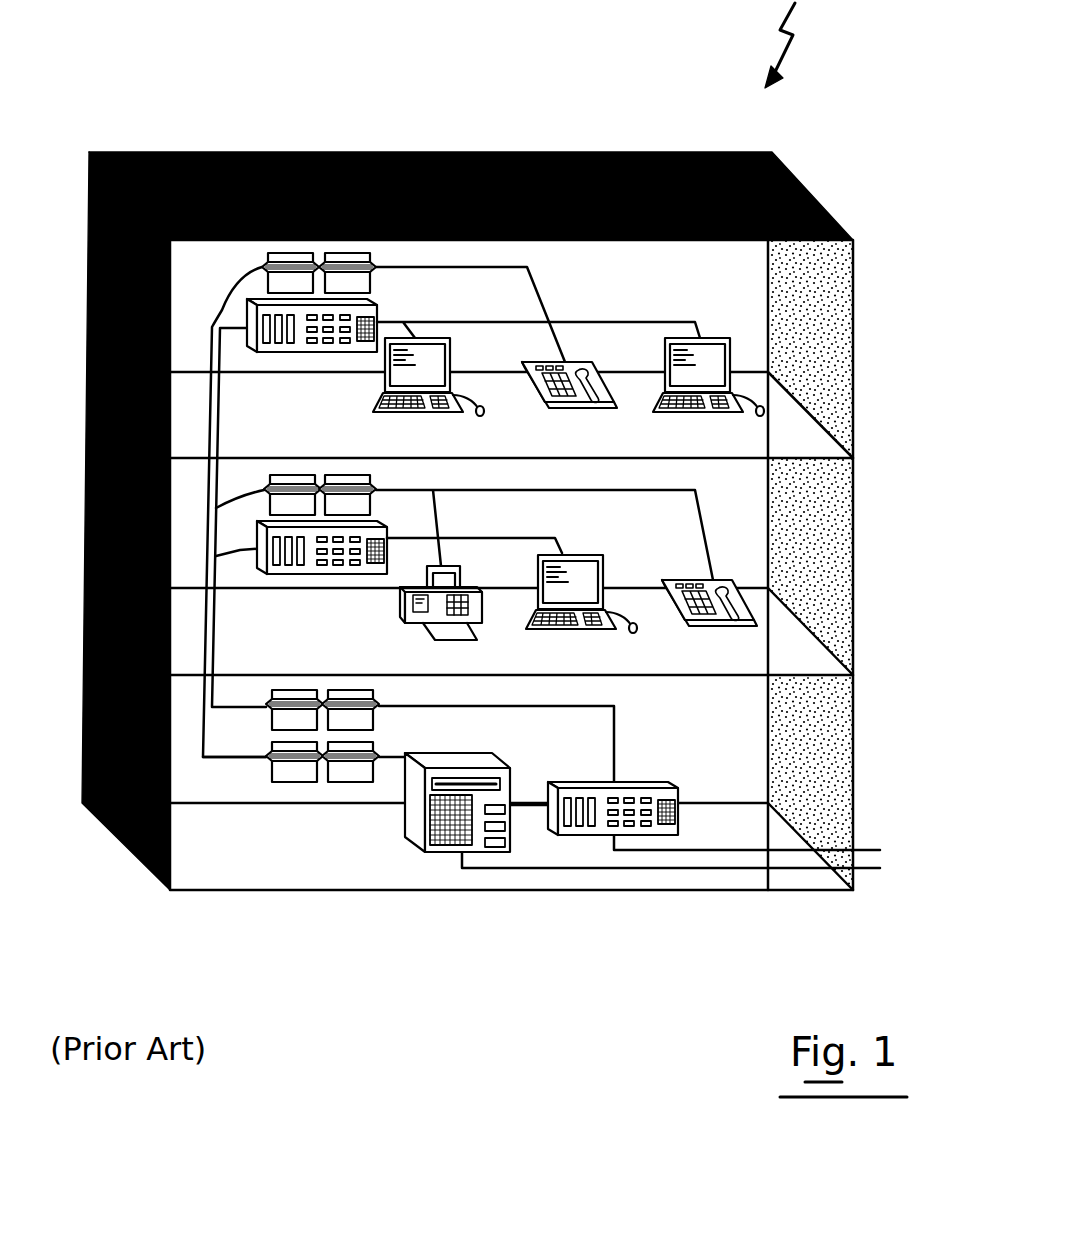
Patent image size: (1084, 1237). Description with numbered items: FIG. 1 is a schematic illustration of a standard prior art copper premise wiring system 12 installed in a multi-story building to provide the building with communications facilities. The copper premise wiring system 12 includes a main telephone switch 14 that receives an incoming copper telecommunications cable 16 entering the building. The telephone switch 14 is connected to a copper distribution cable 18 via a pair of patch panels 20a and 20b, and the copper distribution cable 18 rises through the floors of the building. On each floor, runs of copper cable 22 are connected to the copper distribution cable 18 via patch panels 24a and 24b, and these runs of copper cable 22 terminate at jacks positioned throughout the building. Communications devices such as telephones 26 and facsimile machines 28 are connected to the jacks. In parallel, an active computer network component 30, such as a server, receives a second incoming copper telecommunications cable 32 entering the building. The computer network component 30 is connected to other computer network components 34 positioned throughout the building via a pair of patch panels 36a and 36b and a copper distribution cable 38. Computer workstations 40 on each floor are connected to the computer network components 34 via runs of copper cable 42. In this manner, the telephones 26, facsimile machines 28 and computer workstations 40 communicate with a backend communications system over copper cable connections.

The copper premise wiring system 12 is at (818, 348).
The main telephone switch 14 is at (412, 832).
The incoming copper telecommunications cable 16 is at (622, 869).
The copper distribution cable 18 is at (228, 760).
The patch panel 20a is at (288, 771).
The patch panel 20b is at (342, 773).
The runs of copper cable 22 is at (535, 291).
The patch panel 24a is at (288, 253).
The patch panel 24b is at (352, 255).
The telephone 26 is at (608, 404).
The facsimile machine 28 is at (415, 622).
The active computer network component 30 is at (635, 783).
The incoming copper telecommunications cable 32 is at (710, 847).
The computer network component 34 is at (365, 315).
The patch panel 36a is at (282, 693).
The patch panel 36b is at (365, 696).
The copper distribution cable 38 is at (211, 620).
The computer workstation 40 is at (433, 407).
The runs of copper cable 42 is at (618, 316).